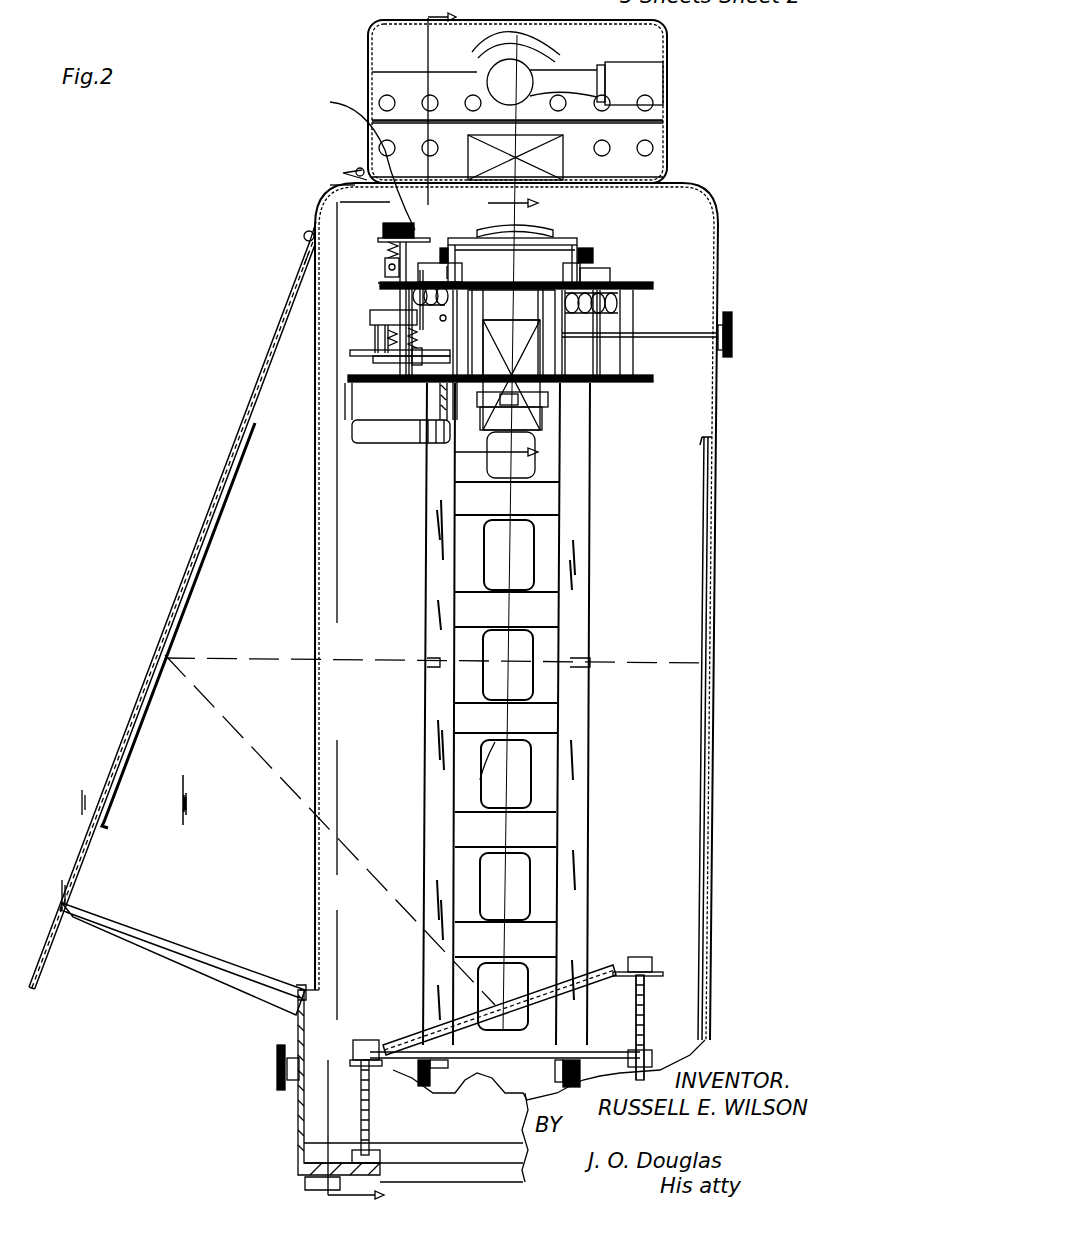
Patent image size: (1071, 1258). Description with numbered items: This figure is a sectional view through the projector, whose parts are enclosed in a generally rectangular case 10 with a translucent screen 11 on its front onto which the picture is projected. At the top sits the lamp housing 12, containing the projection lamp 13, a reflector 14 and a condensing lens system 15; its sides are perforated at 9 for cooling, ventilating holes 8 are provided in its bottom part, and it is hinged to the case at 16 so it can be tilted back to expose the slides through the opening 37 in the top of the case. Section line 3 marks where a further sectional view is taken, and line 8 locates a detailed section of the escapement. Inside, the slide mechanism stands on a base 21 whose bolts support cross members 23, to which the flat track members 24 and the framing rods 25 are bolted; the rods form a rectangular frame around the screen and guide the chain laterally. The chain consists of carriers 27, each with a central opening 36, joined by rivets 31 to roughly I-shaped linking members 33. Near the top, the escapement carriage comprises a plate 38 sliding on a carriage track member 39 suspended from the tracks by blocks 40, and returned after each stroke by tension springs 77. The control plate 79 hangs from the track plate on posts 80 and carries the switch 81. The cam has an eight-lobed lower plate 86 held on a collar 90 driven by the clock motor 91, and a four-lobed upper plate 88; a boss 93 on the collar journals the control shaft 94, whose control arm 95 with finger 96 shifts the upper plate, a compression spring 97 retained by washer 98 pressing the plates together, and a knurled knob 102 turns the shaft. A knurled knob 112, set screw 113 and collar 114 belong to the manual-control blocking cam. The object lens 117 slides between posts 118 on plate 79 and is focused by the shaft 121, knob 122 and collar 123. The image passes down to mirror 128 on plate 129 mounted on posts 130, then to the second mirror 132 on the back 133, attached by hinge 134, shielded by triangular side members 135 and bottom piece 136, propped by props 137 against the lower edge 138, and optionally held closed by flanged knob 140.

The section line 3— 3 is at (440, 240).
The ventilating holes 8 is at (650, 132).
The perforations 9 is at (428, 97).
The case 10 is at (734, 416).
The translucent screen 11 is at (714, 588).
The lamp housing 12 is at (667, 48).
The projection lamp 13 is at (490, 72).
The reflector 14 is at (560, 55).
The condensing lens system 15 is at (445, 125).
The hinge 16 is at (363, 173).
The base 21 is at (375, 1182).
The cross members 23 is at (360, 1085).
The flat track members 24 is at (610, 260).
The framing rods 25 is at (438, 230).
The carrier 27 is at (660, 200).
The rivet 31 is at (478, 240).
The linking member 33 is at (555, 240).
The central opening 36 is at (485, 770).
The opening 37 is at (590, 175).
The plate 38 is at (560, 282).
The carriage track member 39 is at (442, 260).
The blocks 40 is at (718, 245).
The tension springs 77 is at (350, 285).
The plate 79 is at (650, 383).
The posts 80 is at (615, 345).
The switch 81 is at (440, 383).
The lower plate 86 is at (370, 352).
The upper plate 88 is at (511, 360).
The collar 90 is at (345, 372).
The motor 91 is at (415, 443).
The boss 93 is at (340, 355).
The control shaft 94 is at (395, 240).
The control arm 95 is at (395, 292).
The finger 96 is at (370, 318).
The compression spring 97 is at (378, 336).
The washer 98 is at (460, 345).
The knurled knob 102 is at (349, 159).
The knurled knob 112 is at (355, 172).
The set screw 113 is at (383, 268).
The collar 114 is at (330, 187).
The object lens 117 is at (560, 430).
The posts 118 is at (455, 382).
The shaft 121 is at (705, 340).
The knob 122 is at (732, 315).
The collar 123 is at (560, 400).
The mirror 128 is at (600, 968).
The plate 129 is at (645, 995).
The posts 130 is at (645, 1020).
The second mirror 132 is at (140, 745).
The back 133 is at (78, 838).
The hinge 134 is at (365, 245).
The triangular side members 135 is at (185, 590).
The bottom piece 136 is at (178, 945).
The props 137 is at (270, 1010).
The lower edge 138 is at (330, 995).
The flanged knob 140 is at (283, 1090).